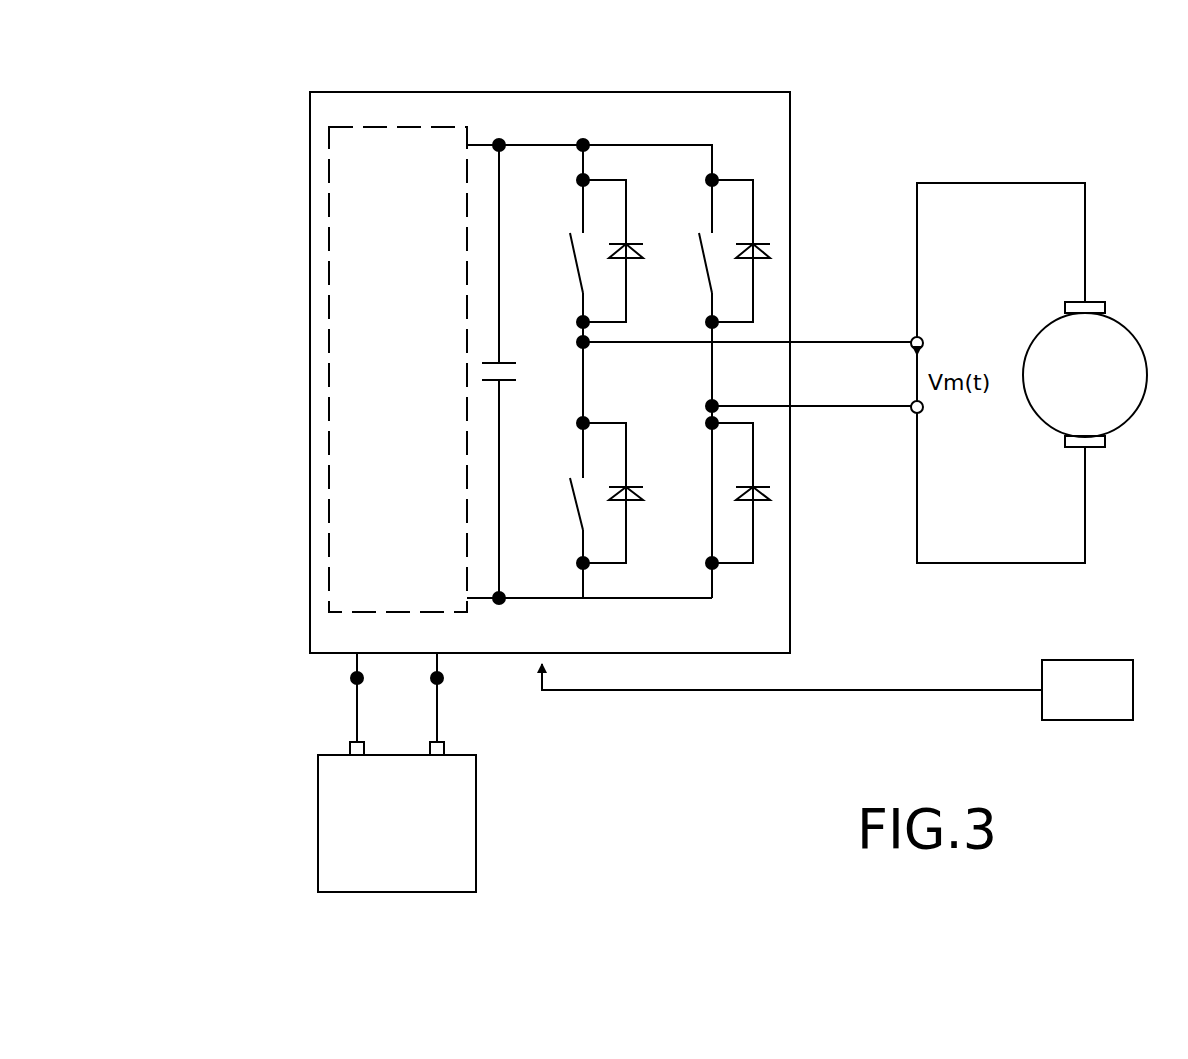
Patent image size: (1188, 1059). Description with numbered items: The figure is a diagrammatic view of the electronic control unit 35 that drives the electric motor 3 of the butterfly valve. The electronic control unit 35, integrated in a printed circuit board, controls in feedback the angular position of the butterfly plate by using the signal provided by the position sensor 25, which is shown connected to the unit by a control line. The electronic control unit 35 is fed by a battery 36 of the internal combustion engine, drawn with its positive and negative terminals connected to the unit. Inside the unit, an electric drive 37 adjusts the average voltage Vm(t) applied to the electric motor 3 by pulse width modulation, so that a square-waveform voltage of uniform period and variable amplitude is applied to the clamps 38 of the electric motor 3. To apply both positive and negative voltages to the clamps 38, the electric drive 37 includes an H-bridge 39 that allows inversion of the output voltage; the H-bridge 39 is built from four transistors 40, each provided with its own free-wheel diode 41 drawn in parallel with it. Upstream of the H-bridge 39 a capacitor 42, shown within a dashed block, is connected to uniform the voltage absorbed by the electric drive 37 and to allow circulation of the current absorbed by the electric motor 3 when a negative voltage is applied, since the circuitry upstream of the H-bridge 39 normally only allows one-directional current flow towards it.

The electronic control unit 35 is at (229, 160).
The capacitor 42 is at (497, 375).
The H-bridge 39 is at (697, 314).
The transistor 40 is at (700, 262).
The free-wheel diode 41 is at (753, 247).
The clamps 38 is at (923, 337).
The electric motor 3 is at (1032, 373).
The battery 36 is at (397, 772).
The electric drive 37 is at (629, 750).
The position sensor 25 is at (1087, 690).